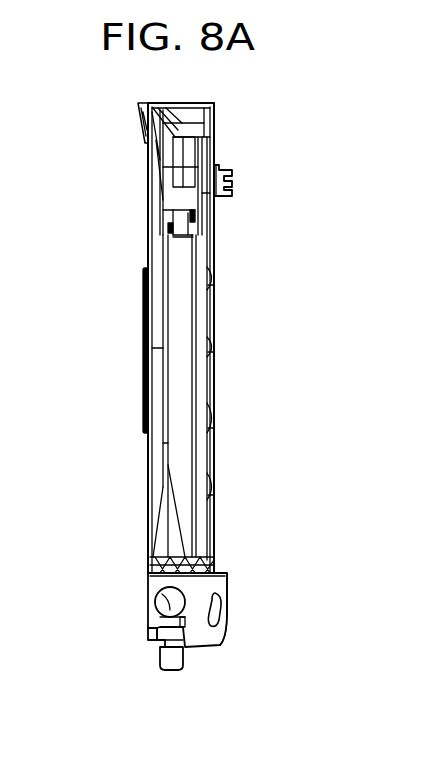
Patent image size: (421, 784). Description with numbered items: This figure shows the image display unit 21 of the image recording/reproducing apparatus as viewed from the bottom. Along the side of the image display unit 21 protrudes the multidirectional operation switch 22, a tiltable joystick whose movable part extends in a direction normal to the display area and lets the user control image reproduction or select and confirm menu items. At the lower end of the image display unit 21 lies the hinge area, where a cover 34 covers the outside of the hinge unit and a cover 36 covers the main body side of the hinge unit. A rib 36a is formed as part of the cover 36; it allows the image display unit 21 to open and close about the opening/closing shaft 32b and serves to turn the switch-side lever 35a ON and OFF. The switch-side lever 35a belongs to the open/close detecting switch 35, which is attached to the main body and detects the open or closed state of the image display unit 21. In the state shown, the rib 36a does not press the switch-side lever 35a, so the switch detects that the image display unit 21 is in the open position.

The image display unit 21 is at (142, 338).
The multidirectional operation switch 22 is at (233, 170).
The opening/closing shaft 32b is at (148, 571).
The cover 34 is at (155, 604).
The open/close detecting switch 35 is at (176, 670).
The switch-side lever 35a is at (148, 632).
The cover 36 is at (228, 580).
The rib 36a is at (228, 633).